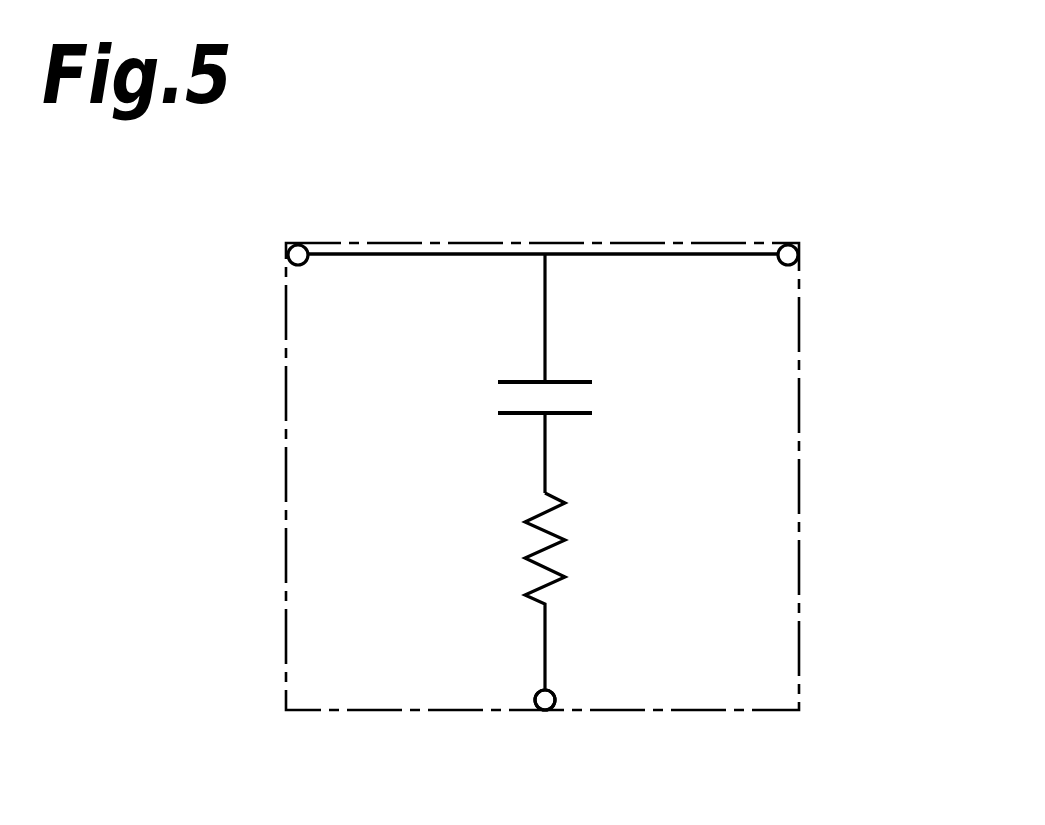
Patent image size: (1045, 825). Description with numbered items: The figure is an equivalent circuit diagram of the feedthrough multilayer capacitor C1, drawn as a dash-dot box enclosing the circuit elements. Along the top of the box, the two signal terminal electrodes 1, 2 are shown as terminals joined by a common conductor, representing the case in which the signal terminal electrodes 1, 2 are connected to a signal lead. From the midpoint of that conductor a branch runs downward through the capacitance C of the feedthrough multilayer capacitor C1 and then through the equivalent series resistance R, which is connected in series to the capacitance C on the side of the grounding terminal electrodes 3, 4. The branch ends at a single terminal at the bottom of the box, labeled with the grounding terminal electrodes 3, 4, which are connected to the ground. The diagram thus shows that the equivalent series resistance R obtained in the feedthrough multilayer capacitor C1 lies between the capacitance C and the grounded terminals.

The signal terminal electrode 1 is at (295, 225).
The signal terminal electrode 2 is at (788, 225).
The grounding terminal electrode 3 is at (544, 734).
The grounding terminal electrode 4 is at (544, 734).
The capacitance C is at (571, 373).
The equivalent series resistance R is at (584, 591).
The feedthrough multilayer capacitor C1 is at (799, 552).